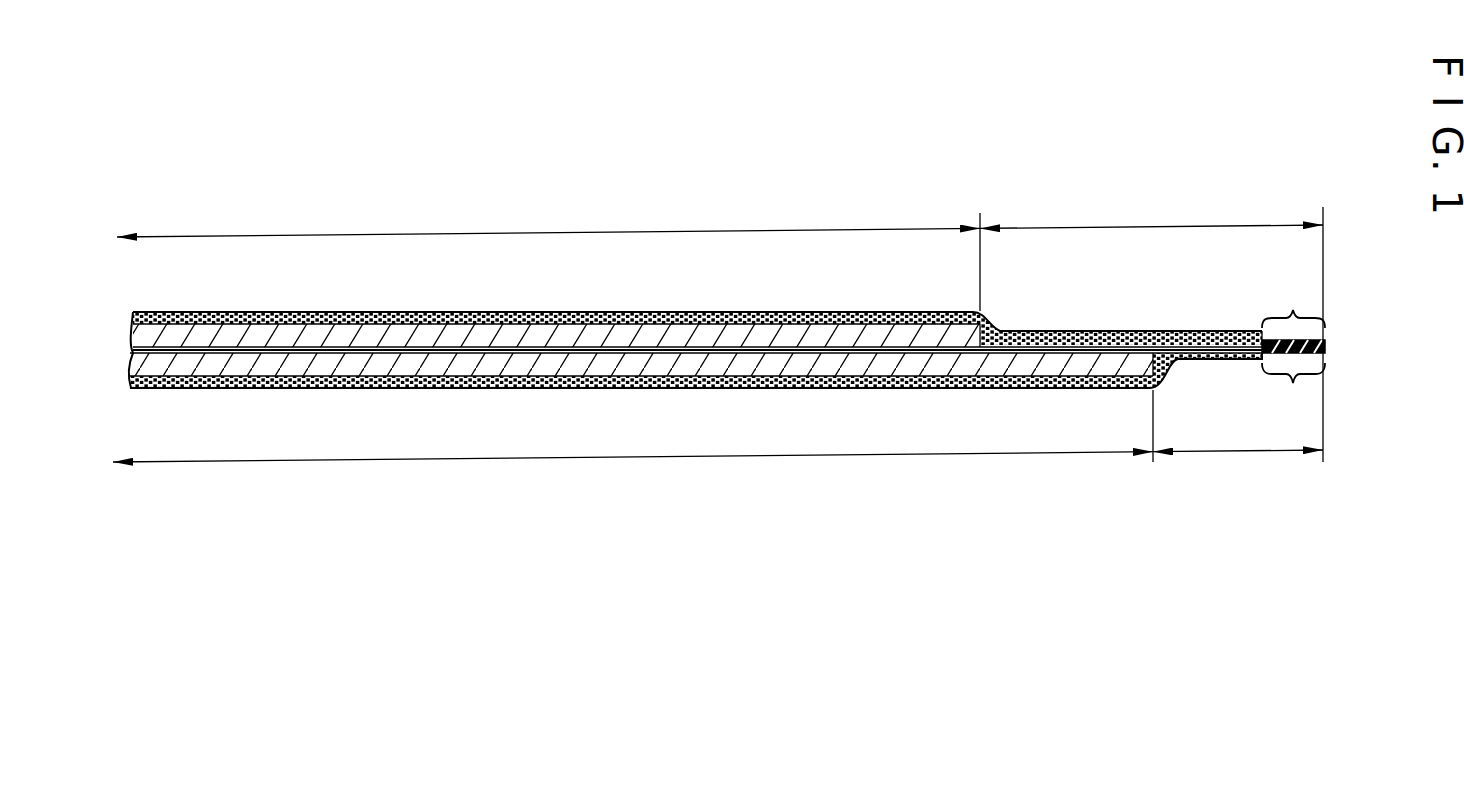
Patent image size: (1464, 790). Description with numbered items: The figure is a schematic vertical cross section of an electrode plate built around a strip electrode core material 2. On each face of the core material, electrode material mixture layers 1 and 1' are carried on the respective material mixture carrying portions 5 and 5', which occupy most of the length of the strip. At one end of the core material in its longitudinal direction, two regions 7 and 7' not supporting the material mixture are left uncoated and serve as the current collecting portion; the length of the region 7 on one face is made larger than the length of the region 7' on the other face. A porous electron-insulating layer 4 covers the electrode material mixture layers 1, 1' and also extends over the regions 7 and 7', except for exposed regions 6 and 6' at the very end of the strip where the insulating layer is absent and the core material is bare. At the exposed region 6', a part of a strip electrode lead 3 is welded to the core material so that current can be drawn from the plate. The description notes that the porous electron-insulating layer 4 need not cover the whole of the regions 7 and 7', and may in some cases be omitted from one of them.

The electrode material mixture layer 1 is at (697, 305).
The electrode material mixture layer 1' is at (696, 394).
The strip electrode core material 2 is at (808, 348).
The strip electrode lead 3 is at (1302, 352).
The porous electron-insulating layer 4 is at (463, 322).
The material mixture carrying portion 5 is at (548, 253).
The material mixture carrying portion 5' is at (633, 426).
The exposed region 6 is at (1293, 297).
The exposed region 6' is at (1293, 395).
The region not supporting the material mixture 7 is at (1151, 324).
The region not supporting the material mixture 7' is at (1238, 432).